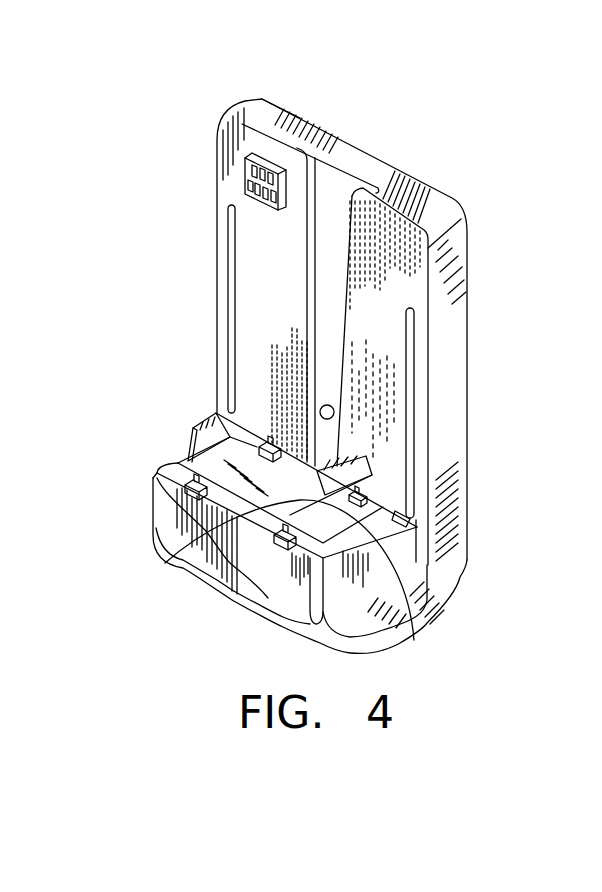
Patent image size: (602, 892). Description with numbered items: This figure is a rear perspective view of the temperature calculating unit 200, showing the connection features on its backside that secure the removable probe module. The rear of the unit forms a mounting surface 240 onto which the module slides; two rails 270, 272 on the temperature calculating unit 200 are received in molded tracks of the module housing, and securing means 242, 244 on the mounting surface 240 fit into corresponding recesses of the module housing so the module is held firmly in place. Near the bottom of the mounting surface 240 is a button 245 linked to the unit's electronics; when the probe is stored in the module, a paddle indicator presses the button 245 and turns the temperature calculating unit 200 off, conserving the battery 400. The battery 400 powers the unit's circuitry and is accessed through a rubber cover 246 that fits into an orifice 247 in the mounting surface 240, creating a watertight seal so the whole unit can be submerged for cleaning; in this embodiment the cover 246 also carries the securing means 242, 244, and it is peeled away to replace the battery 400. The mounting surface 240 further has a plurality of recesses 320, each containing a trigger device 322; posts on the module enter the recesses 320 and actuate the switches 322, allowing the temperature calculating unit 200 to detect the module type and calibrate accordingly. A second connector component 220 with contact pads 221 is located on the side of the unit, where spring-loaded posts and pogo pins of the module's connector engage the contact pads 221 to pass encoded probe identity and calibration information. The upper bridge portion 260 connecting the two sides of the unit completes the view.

The temperature calculating unit 200 is at (483, 172).
The second connector component 220 is at (251, 165).
The contact pads 221 is at (245, 187).
The mounting surface 240 is at (250, 600).
The securing means 242 is at (190, 440).
The securing means 244 is at (372, 474).
The button 245 is at (320, 413).
The cover 246 is at (165, 563).
The orifice 247 is at (414, 630).
The top bridge portion 260 is at (338, 170).
The rail 270 is at (407, 352).
The rail 272 is at (232, 296).
The recesses 320 is at (259, 441).
The trigger device 322 is at (183, 486).
The battery 400 is at (414, 524).